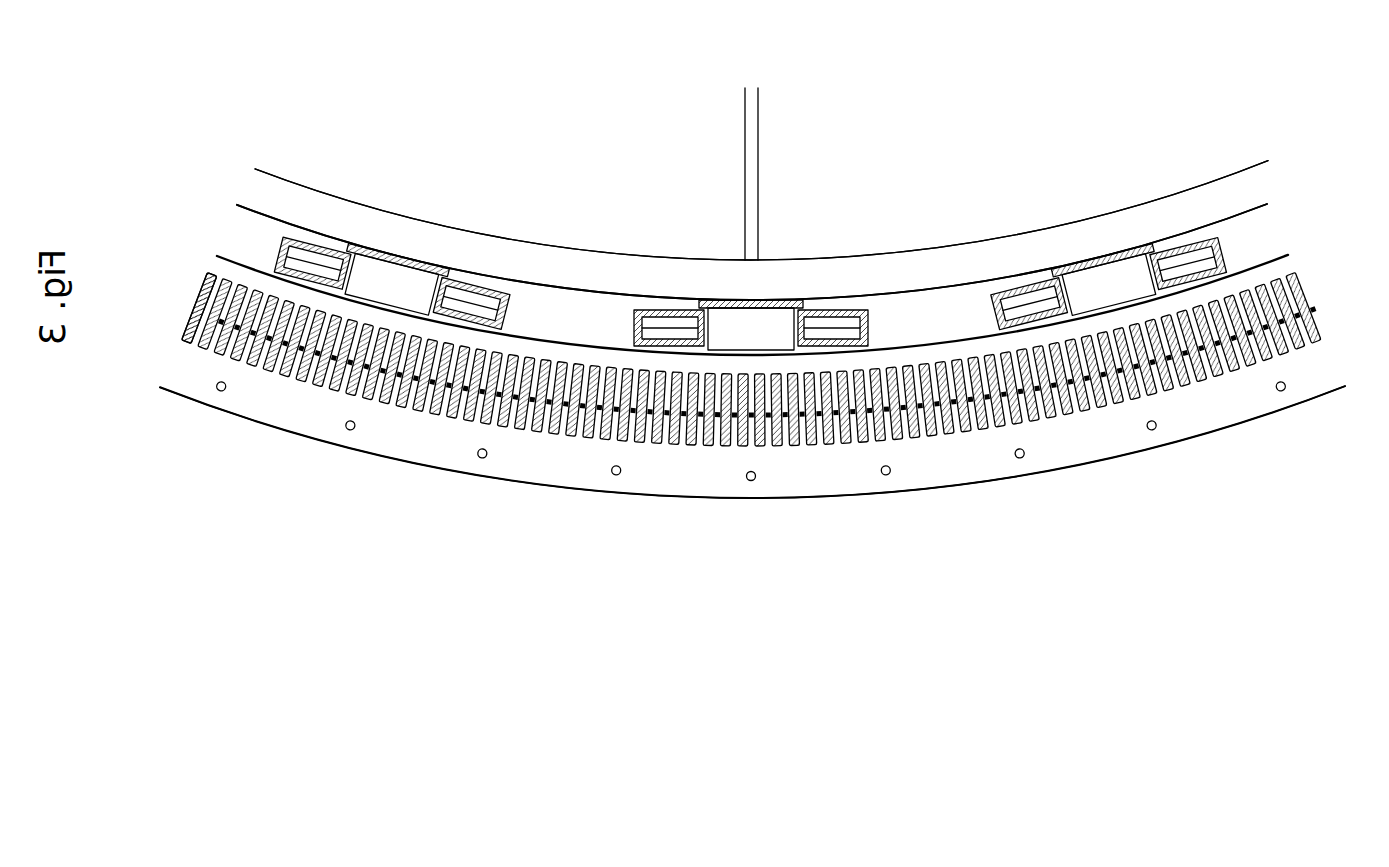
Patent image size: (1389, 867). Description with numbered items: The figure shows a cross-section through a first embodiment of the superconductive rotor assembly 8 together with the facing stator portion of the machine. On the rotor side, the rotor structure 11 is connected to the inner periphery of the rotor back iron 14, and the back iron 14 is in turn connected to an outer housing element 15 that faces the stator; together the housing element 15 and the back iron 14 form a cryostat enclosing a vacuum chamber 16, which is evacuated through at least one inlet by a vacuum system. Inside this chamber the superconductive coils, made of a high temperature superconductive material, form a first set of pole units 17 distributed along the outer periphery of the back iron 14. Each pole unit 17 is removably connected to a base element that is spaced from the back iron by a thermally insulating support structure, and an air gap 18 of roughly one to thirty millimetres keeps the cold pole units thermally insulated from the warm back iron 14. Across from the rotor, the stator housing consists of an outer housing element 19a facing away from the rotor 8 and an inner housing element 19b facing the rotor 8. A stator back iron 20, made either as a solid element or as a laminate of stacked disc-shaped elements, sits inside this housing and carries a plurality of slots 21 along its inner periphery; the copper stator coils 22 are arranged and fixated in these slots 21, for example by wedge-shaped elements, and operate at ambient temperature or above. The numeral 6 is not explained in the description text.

The rotor 6 is at (163, 352).
The superconductive rotor assembly 8 is at (214, 191).
The rotor structure 11 is at (745, 150).
The rotor back iron 14 is at (612, 264).
The outer housing element 15 is at (1275, 246).
The vacuum chamber 16 is at (1258, 222).
The pole unit 17 is at (790, 296).
The air gap 18 is at (357, 245).
The outer housing element 19a is at (1248, 425).
The inner housing element 19b is at (1283, 271).
The stator back iron 20 is at (822, 478).
The slot 21 is at (676, 458).
The stator coil 22 is at (594, 444).